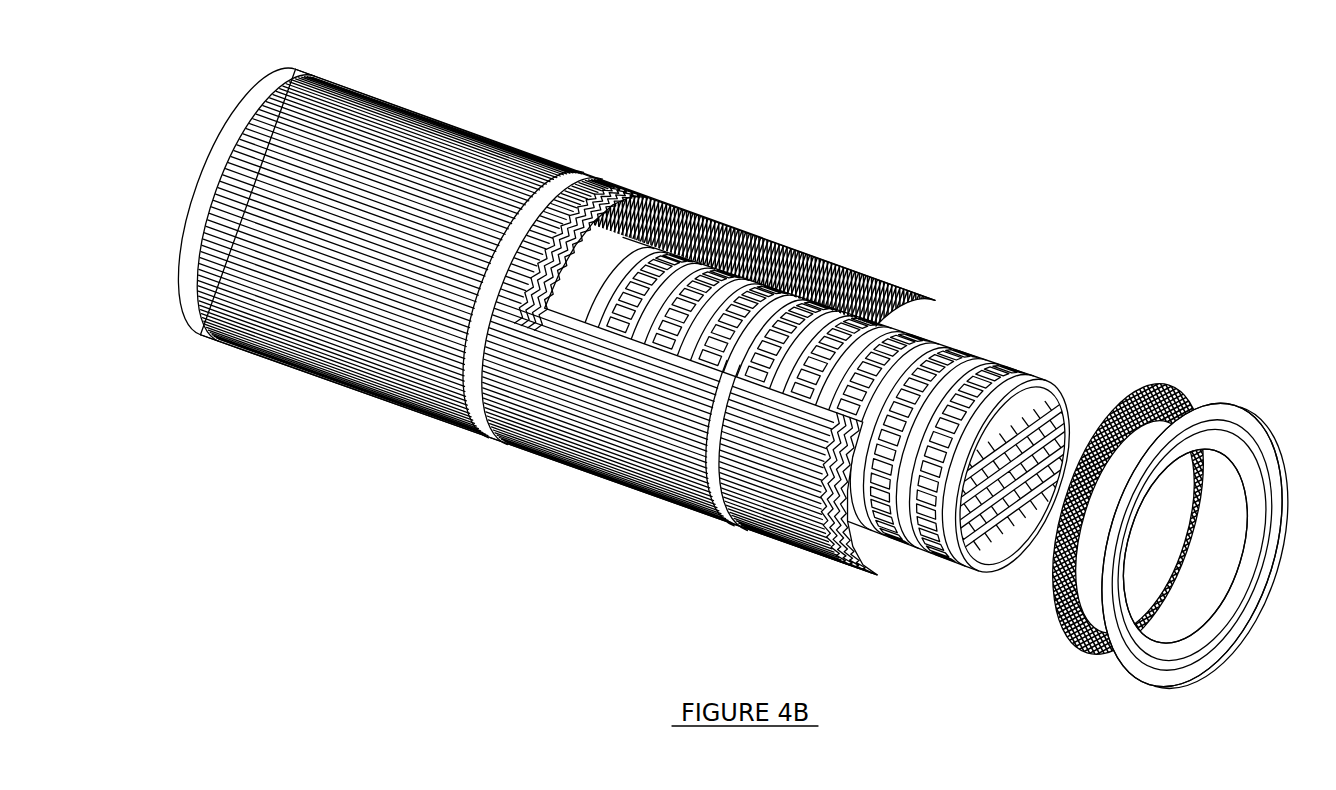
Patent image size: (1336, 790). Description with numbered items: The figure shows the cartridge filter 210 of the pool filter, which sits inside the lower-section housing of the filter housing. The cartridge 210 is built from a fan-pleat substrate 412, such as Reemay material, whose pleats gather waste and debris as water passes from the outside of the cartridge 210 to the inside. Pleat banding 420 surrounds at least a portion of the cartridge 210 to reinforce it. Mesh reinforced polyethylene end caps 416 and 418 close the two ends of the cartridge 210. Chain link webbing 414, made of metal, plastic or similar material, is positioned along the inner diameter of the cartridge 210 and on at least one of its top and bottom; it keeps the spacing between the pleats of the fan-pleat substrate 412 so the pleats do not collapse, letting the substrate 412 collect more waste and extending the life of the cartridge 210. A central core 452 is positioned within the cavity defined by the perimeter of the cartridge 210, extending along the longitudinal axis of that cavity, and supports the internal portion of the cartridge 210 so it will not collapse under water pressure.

The cartridge filter 210 is at (719, 391).
The fan-pleat substrate 412 is at (648, 195).
The chain link webbing 414 is at (1168, 384).
The mesh reinforced polyethylene end cap 416 is at (1208, 414).
The mesh reinforced polyethylene end cap 418 is at (208, 143).
The pleat banding 420 is at (592, 180).
The central core 452 is at (994, 357).